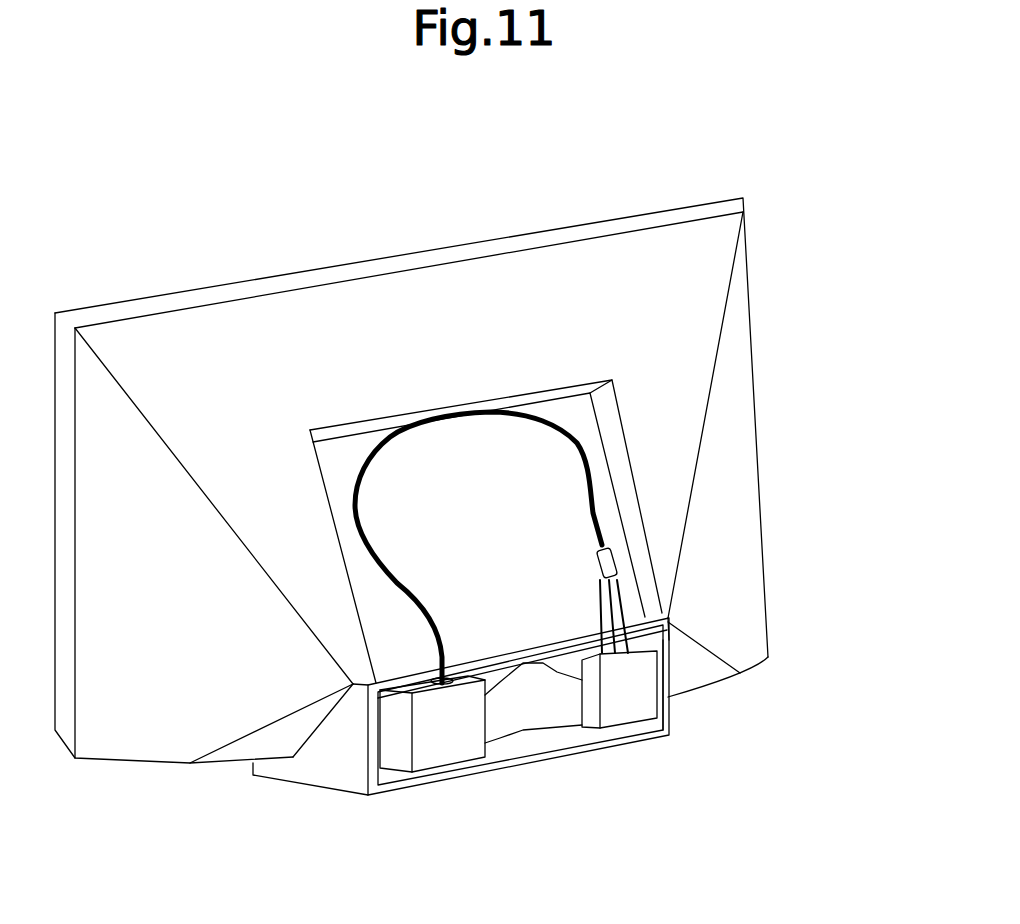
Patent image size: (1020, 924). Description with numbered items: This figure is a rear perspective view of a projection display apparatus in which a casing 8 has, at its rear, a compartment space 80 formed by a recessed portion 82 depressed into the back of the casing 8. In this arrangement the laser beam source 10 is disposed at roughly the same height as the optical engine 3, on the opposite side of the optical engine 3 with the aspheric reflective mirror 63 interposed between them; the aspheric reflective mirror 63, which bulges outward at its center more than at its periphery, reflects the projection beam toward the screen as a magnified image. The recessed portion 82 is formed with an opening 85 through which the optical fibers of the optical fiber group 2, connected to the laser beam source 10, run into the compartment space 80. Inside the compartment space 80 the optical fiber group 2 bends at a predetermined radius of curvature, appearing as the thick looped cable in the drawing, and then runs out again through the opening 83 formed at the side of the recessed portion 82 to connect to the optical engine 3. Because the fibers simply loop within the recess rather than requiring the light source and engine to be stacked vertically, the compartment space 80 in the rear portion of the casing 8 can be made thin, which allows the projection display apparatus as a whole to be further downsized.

The optical fiber group 2 is at (400, 420).
The optical engine 3 is at (458, 765).
The casing 8 is at (677, 257).
The laser beam source 10 is at (668, 713).
The aspheric reflective mirror 63 is at (573, 732).
The compartment space 80 is at (173, 698).
The recessed portion 82 is at (562, 410).
The opening 83 is at (368, 688).
The opening 85 is at (668, 618).